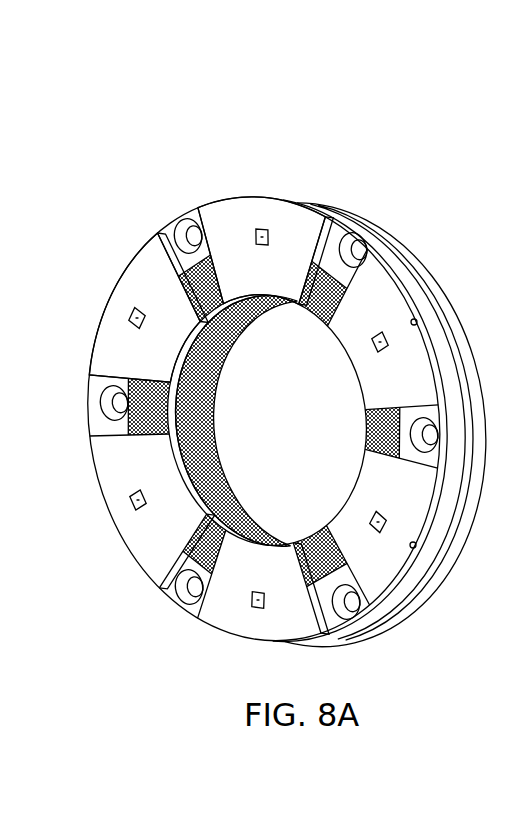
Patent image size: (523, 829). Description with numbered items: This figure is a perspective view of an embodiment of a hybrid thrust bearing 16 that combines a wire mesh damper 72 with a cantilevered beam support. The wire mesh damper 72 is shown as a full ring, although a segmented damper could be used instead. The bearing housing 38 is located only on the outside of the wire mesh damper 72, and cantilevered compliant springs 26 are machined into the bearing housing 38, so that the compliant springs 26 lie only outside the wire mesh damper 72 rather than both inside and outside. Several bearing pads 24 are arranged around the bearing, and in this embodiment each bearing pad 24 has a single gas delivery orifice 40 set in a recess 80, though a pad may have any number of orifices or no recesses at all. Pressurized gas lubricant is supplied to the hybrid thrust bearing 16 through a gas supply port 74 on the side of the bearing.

The hybrid thrust bearing 16 is at (178, 100).
The bearing pad 24 is at (141, 280).
The cantilevered compliant springs 26 is at (422, 277).
The bearing housing 38 is at (368, 220).
The gas delivery orifice 40 is at (248, 237).
The wire mesh damper 72 is at (102, 403).
The gas supply port 74 is at (418, 320).
The recess 80 is at (262, 230).